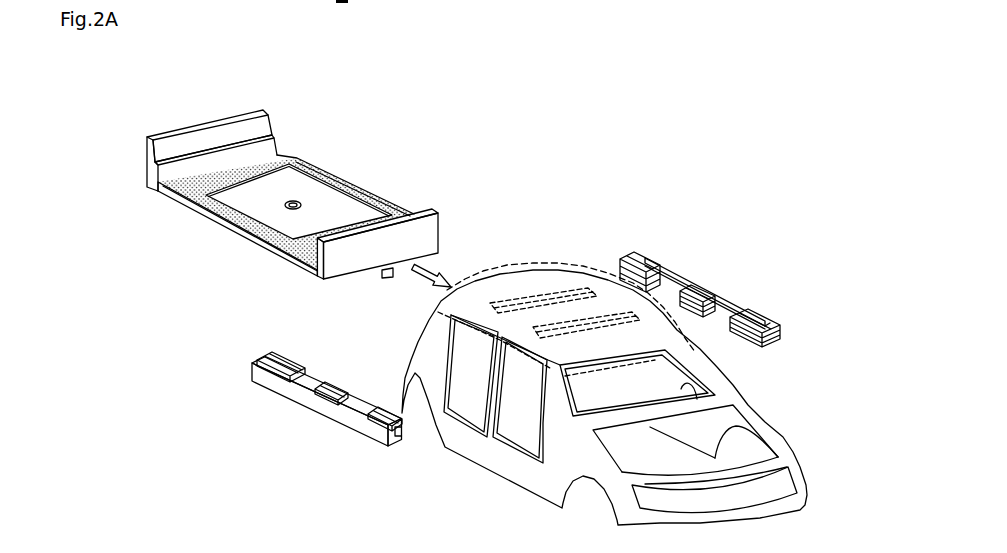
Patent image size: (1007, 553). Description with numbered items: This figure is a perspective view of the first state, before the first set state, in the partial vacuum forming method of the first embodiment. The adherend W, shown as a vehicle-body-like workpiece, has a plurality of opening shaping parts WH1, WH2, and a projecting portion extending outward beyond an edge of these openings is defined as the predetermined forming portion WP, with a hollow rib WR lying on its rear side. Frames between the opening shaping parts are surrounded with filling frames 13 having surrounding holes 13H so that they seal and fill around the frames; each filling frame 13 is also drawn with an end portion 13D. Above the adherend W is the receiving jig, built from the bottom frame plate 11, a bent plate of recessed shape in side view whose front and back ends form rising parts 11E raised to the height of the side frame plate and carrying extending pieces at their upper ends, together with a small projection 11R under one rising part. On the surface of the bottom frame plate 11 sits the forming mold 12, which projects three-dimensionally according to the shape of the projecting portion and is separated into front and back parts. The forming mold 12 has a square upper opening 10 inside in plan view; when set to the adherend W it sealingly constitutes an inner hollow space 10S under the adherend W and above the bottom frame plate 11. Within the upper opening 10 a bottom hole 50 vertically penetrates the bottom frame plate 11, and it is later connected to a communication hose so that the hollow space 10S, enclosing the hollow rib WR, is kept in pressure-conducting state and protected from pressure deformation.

The upper opening 10 is at (281, 192).
The hollow space 10S is at (283, 195).
The bottom frame plate 11 is at (288, 266).
The rising parts 11E is at (198, 128).
The positioning projection 11R is at (387, 278).
The forming mold 12 is at (188, 178).
The bottom hole 50 is at (297, 202).
The filling frames 13 is at (506, 374).
The surrounding holes 13H is at (334, 384).
The notch 13D is at (404, 440).
The adherend W is at (631, 348).
The opening shaping part WH1 is at (697, 398).
The opening shaping part WH2 is at (511, 401).
The forming portion WP is at (563, 290).
The hollow rib WR is at (613, 316).